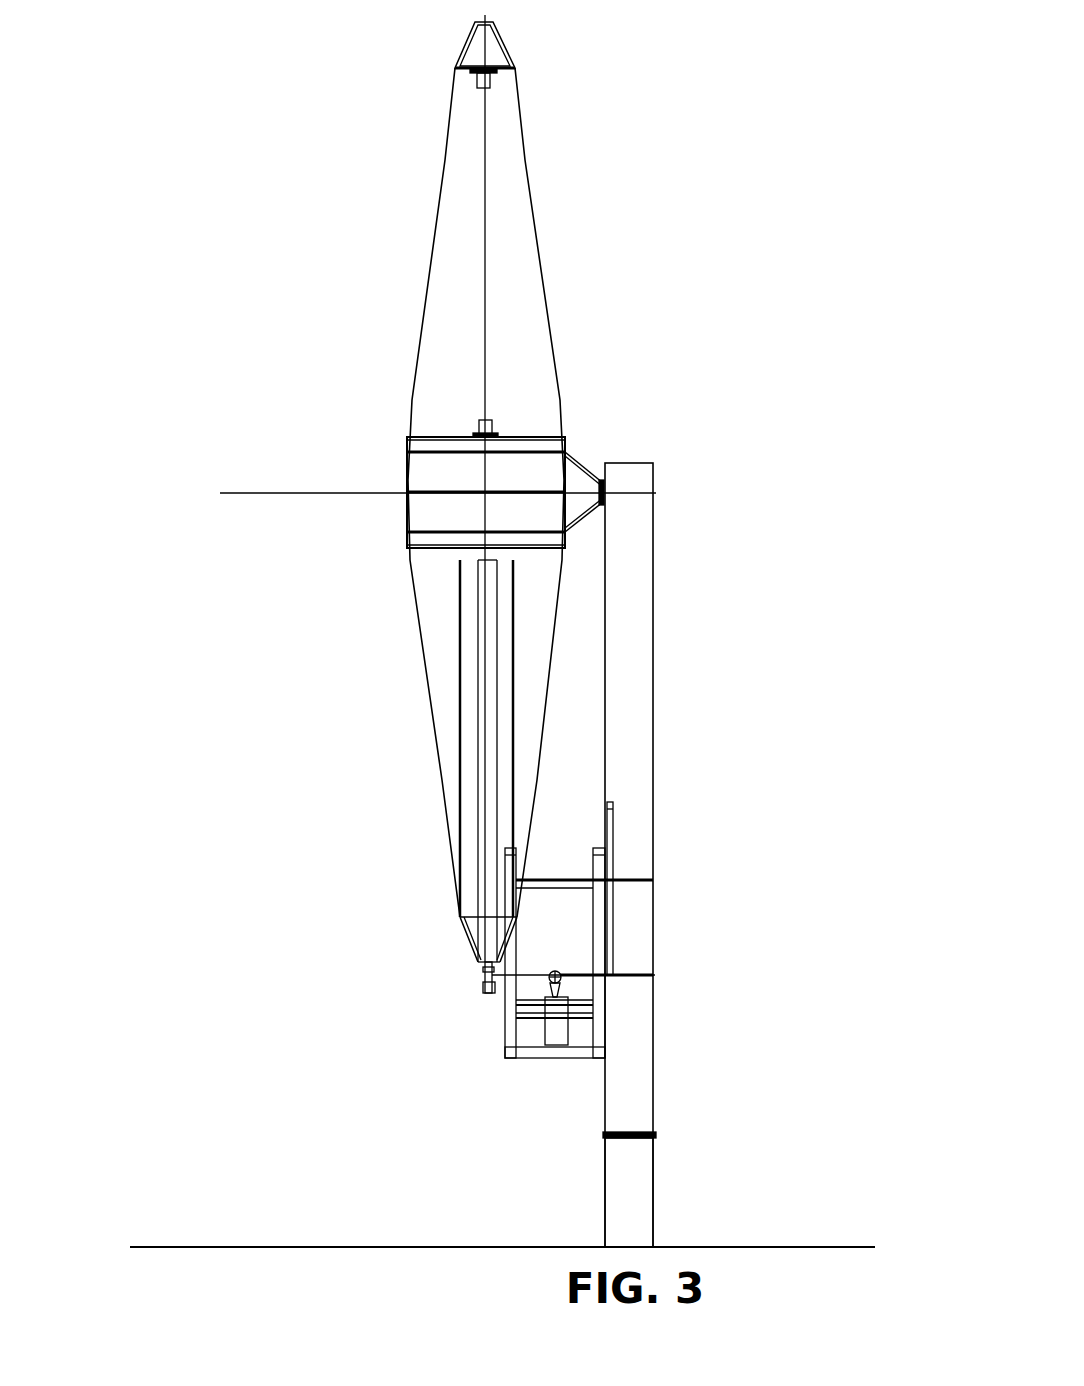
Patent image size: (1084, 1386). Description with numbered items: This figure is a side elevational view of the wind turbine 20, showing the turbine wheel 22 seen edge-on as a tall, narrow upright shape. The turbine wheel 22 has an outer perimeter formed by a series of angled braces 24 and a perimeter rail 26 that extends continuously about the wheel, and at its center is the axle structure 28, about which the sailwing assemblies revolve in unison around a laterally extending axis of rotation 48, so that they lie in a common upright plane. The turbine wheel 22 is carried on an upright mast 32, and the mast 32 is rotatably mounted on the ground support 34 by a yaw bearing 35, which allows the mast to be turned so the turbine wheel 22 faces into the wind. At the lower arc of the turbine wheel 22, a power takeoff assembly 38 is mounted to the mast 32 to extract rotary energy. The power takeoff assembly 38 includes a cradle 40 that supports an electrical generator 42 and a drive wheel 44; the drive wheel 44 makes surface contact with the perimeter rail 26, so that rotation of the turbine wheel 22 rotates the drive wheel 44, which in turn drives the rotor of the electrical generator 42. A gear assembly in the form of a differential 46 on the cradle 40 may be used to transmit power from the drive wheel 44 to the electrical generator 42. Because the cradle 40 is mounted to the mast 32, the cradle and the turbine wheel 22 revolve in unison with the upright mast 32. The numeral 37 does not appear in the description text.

The wind turbine 20 is at (775, 285).
The turbine wheel 22 is at (367, 378).
The angled braces 24 is at (467, 933).
The perimeter rail 26 is at (487, 635).
The axle structure 28 is at (407, 517).
The mast 32 is at (635, 749).
The ground support 34 is at (637, 1197).
The yaw bearing 35 is at (656, 1133).
The blade edges 37 is at (434, 208).
The power takeoff assembly 38 is at (482, 1052).
The cradle 40 is at (553, 1053).
The electrical generator 42 is at (560, 1037).
The drive wheel 44 is at (482, 978).
The differential 46 is at (557, 970).
The axis of rotation 48 is at (293, 492).